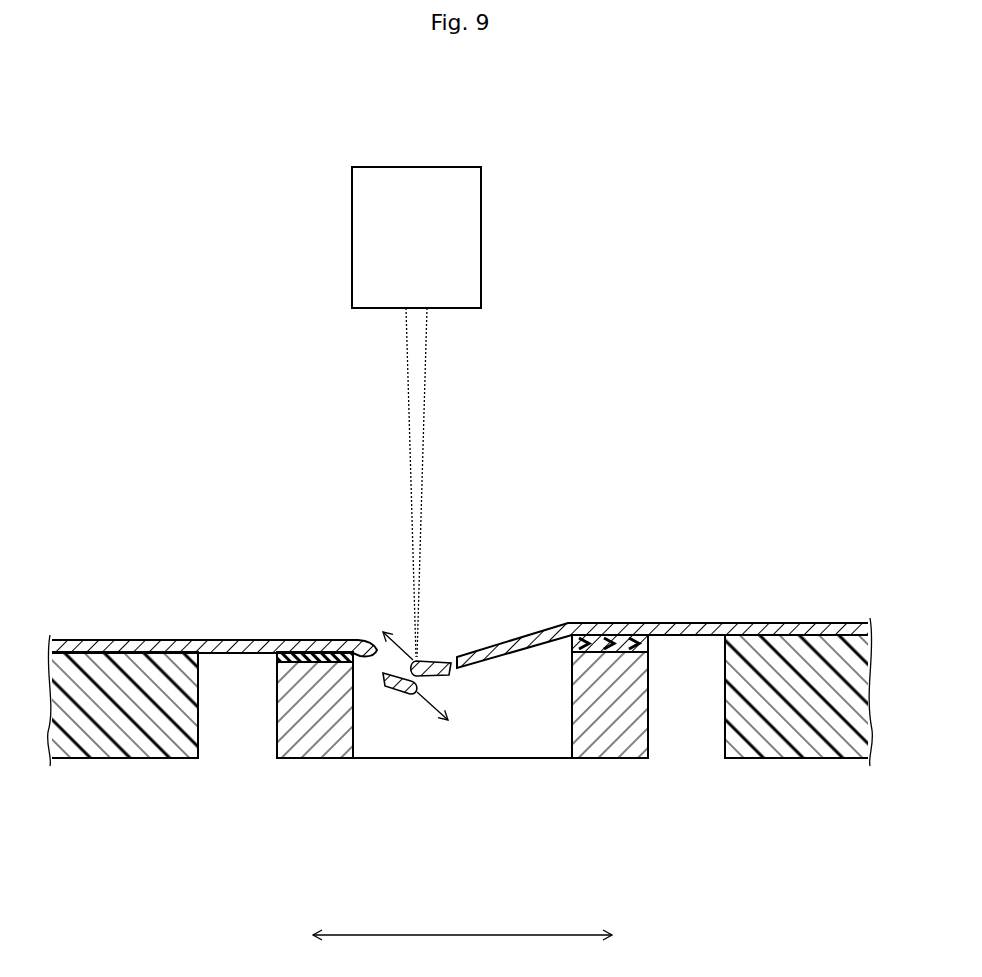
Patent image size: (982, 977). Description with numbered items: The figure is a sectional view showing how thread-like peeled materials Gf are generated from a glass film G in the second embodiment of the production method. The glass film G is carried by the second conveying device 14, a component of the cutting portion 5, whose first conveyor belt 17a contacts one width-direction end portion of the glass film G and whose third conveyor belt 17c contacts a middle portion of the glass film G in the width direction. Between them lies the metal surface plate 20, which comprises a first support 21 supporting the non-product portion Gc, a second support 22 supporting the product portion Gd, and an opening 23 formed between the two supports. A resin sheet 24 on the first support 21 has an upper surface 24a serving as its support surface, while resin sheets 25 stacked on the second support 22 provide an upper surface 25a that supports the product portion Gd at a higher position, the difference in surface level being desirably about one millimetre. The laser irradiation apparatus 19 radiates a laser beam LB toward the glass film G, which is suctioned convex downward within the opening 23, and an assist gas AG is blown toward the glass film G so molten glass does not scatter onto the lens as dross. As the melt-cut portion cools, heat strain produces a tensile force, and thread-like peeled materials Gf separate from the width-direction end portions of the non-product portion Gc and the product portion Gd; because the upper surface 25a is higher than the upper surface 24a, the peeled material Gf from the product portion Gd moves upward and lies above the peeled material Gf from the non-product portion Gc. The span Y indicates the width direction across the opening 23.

The cutting portion 5 is at (578, 187).
The laser irradiation apparatus 19 is at (482, 238).
The laser beam LB is at (423, 392).
The assist gas AG is at (393, 567).
The second conveying device 14 is at (460, 693).
The glass film G is at (460, 602).
The non-product portion Gc is at (270, 641).
The product portion Gd is at (780, 623).
The thread-like peeled material Gf is at (440, 677).
The first conveyor belt 17a is at (127, 759).
The third conveyor belt 17c is at (770, 759).
The surface plate 20 is at (313, 770).
The first support 21 is at (285, 722).
The second support 22 is at (624, 750).
The opening 23 is at (565, 723).
The resin sheet 24 is at (330, 655).
The upper surface 24a is at (303, 652).
The resin sheet 25 is at (640, 638).
The upper surface 25a is at (600, 632).
The Y direction width Y is at (462, 919).